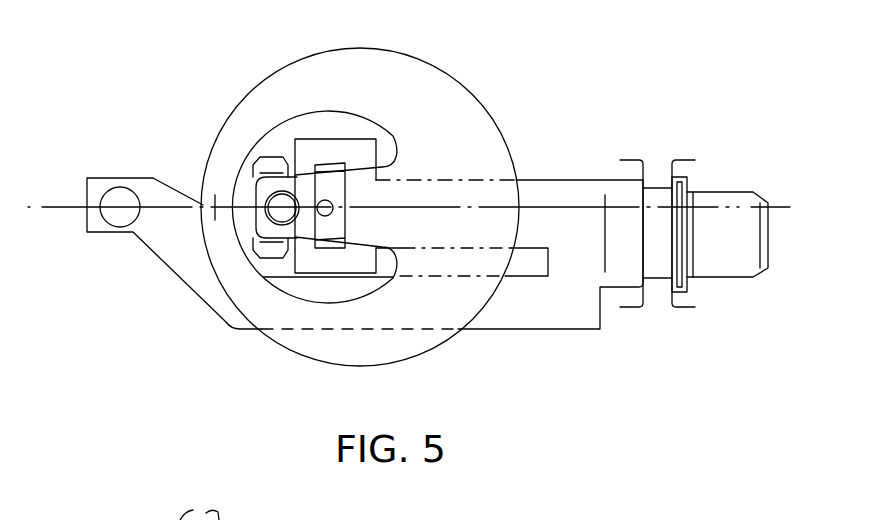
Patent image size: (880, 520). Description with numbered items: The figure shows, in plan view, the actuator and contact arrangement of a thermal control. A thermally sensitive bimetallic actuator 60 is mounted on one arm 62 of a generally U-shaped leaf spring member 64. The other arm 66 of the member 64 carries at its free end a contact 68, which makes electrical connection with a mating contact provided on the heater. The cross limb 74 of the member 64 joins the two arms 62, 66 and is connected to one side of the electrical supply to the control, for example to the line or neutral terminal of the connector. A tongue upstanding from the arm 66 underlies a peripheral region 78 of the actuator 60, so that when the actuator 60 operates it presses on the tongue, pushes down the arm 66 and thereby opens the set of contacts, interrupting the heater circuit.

The thermally sensitive bimetallic actuator 60 is at (445, 87).
The arm 62 is at (545, 197).
The leaf spring member 64 is at (593, 227).
The arm 66 is at (528, 313).
The contact 68 is at (108, 230).
The cross limb 74 is at (613, 277).
The peripheral region 78 is at (215, 195).